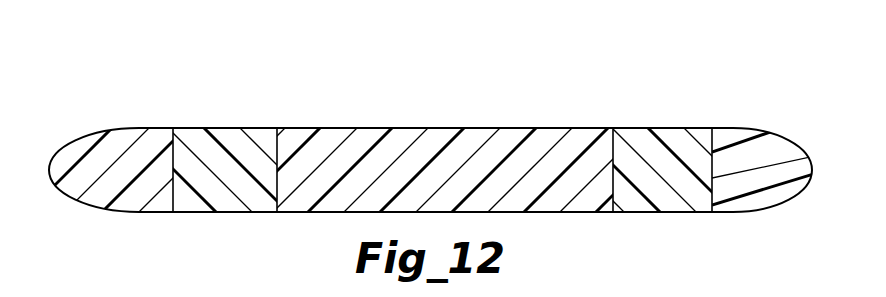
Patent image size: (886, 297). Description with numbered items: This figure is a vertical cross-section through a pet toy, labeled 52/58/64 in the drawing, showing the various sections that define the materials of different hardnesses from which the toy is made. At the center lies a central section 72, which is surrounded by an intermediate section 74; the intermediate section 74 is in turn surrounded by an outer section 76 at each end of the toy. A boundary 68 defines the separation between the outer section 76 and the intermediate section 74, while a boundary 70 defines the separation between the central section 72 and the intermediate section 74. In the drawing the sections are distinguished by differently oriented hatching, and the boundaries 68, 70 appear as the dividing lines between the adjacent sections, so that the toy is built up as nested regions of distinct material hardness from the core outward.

The end joint 52 is at (432, 151).
The end joint 58 is at (432, 151).
The pet toy 64 is at (160, 92).
The boundary 68 is at (173, 170).
The boundary 70 is at (270, 182).
The central section 72 is at (400, 143).
The intermediate section 74 is at (238, 152).
The outer section 76 is at (110, 133).